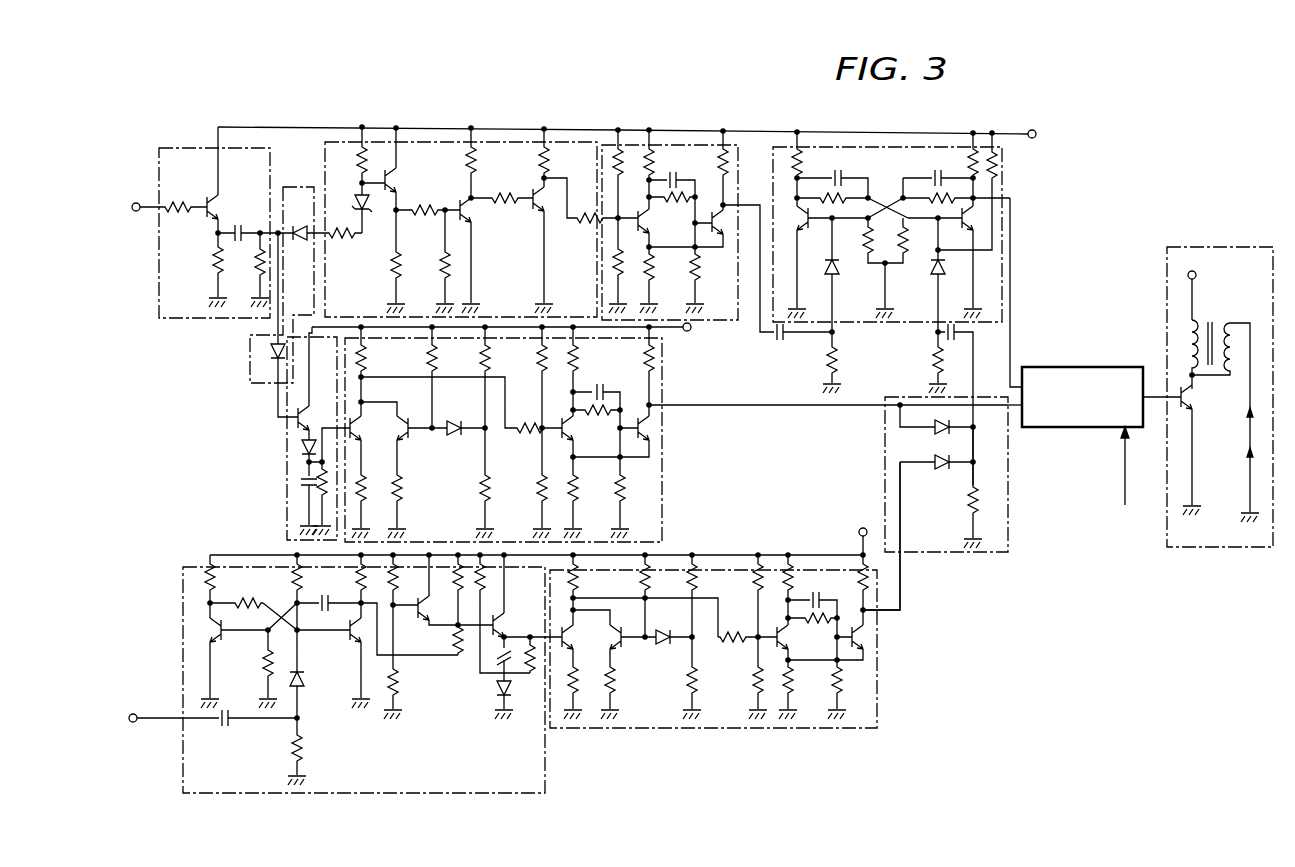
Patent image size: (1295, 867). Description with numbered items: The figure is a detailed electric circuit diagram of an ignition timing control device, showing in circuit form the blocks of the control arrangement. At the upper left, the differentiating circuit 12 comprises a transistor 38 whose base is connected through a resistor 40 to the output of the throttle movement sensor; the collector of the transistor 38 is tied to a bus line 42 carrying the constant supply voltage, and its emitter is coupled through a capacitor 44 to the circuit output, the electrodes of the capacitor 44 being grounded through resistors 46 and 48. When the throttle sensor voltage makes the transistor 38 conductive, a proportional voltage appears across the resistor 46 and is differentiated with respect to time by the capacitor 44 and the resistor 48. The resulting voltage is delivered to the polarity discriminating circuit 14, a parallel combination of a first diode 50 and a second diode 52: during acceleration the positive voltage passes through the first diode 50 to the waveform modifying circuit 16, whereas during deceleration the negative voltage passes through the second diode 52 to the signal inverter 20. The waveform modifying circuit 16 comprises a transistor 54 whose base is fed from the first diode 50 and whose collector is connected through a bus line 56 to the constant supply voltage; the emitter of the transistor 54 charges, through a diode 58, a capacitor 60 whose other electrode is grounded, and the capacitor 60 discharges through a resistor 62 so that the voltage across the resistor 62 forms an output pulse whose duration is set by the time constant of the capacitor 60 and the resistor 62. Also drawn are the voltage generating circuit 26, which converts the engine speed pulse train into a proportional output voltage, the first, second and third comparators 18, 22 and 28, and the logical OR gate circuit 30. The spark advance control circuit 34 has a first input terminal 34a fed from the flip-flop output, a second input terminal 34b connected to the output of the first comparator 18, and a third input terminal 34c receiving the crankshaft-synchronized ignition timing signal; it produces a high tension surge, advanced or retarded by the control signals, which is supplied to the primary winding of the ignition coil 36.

The differentiating circuit 12 is at (201, 210).
The transistor 38 is at (205, 199).
The resistor 40 is at (180, 226).
The capacitor 44 is at (243, 226).
The resistor 46 is at (213, 263).
The resistor 48 is at (257, 255).
The second diode 52 is at (300, 242).
The bus line 42 is at (292, 128).
The polarity discriminating circuit 14 is at (276, 302).
The first diode 50 is at (268, 355).
The waveform modifying circuit 16 is at (276, 435).
The transistor 54 is at (296, 419).
The diode 58 is at (300, 448).
The capacitor 60 is at (300, 484).
The resistor 62 is at (318, 500).
The bus line 56 is at (333, 327).
The first comparator 18 is at (662, 446).
The signal inverter 20 is at (492, 142).
The second comparator 22 is at (676, 145).
The voltage generating circuit 26 is at (183, 630).
The third comparator 28 is at (877, 645).
The logical OR gate circuit 30 is at (1008, 522).
The spark advance control circuit 34 is at (1094, 369).
The first input terminal 34a is at (1014, 380).
The second input terminal 34b is at (1013, 412).
The third input terminal 34c is at (1122, 462).
The ignition coil 36 is at (1167, 264).